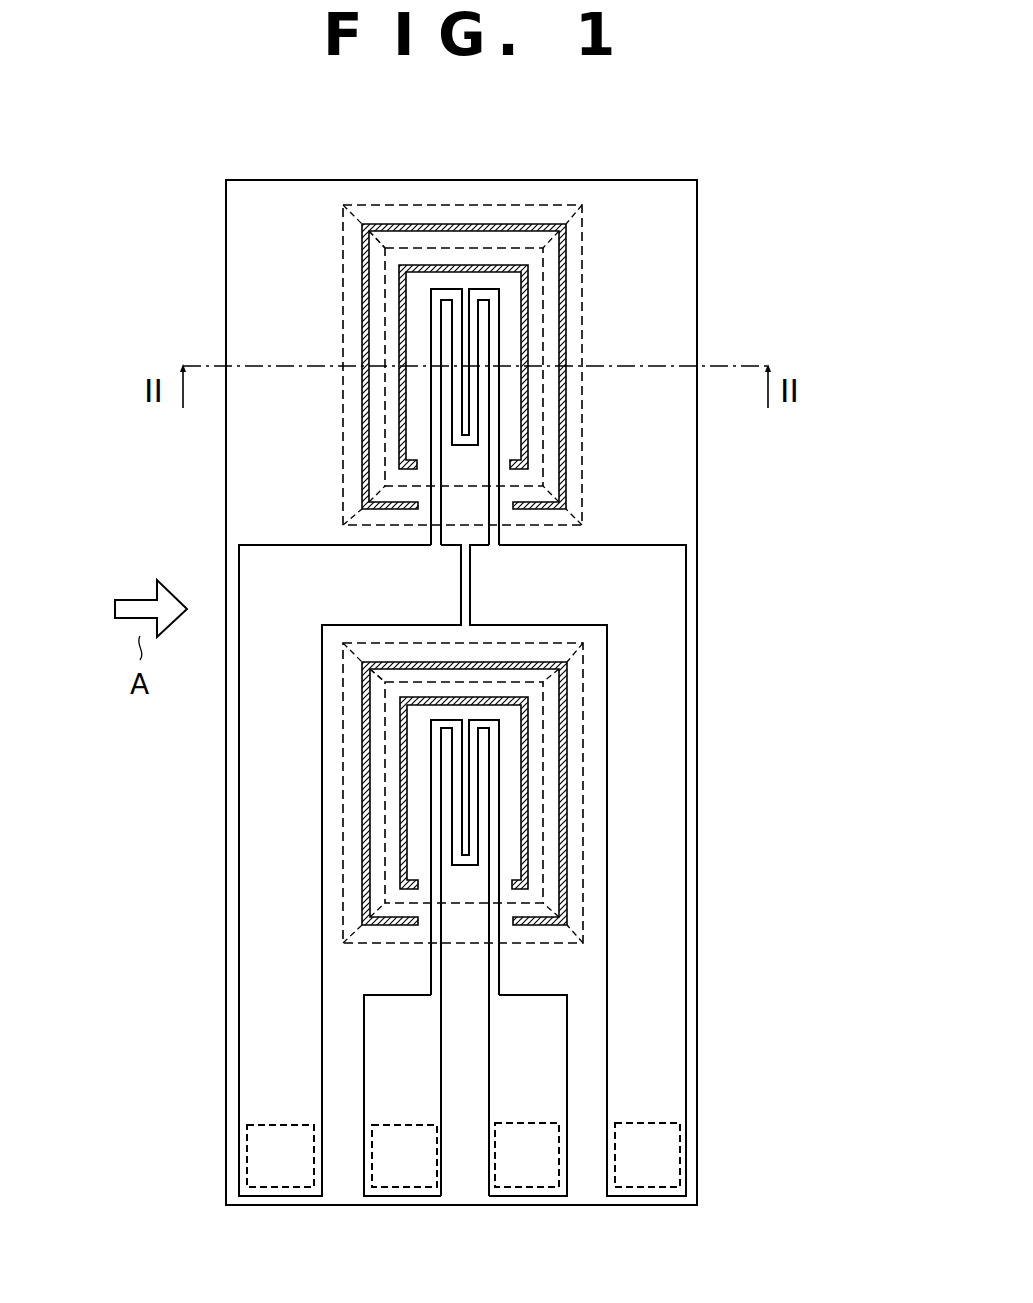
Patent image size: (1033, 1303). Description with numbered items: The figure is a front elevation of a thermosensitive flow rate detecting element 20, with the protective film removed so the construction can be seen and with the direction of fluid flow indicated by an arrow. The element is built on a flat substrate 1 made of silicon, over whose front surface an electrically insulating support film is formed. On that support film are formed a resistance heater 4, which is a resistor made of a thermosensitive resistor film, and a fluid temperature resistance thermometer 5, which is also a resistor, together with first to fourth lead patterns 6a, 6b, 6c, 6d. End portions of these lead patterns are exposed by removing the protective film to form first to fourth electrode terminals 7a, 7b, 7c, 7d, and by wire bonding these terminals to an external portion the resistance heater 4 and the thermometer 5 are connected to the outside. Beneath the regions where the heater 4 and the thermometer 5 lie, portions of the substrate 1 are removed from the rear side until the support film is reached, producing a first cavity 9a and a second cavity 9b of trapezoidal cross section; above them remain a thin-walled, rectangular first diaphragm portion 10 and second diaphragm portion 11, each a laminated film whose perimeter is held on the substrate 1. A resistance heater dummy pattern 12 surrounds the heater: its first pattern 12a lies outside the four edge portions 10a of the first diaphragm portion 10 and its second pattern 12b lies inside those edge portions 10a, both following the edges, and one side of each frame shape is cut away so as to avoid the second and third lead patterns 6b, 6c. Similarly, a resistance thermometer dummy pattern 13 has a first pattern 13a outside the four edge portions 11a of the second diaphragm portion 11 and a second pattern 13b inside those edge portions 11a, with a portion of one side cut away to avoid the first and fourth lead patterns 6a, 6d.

The flat substrate 1 is at (693, 963).
The resistance heater 4 is at (465, 866).
The fluid temperature resistance thermometer 5 is at (465, 448).
The first lead pattern 6a is at (350, 870).
The second lead pattern 6b is at (402, 1095).
The third lead pattern 6c is at (528, 1095).
The fourth lead pattern 6d is at (578, 870).
The first electrode terminal 7a is at (280, 1156).
The second electrode terminal 7b is at (404, 1156).
The third electrode terminal 7c is at (527, 1155).
The fourth electrode terminal 7d is at (647, 1155).
The first cavity 9a is at (436, 682).
The second cavity 9b is at (436, 248).
The first diaphragm portion 10 is at (506, 682).
The edge portions 10a is at (383, 705).
The second diaphragm portion 11 is at (506, 248).
The edge portions 11a is at (378, 268).
The resistance heater dummy pattern 12 is at (357, 904).
The first pattern 12a is at (363, 762).
The second pattern 12b is at (399, 873).
The resistance thermometer dummy pattern 13 is at (357, 454).
The first pattern 13a is at (362, 331).
The second pattern 13b is at (398, 436).
The surface acoustic wave device 20 is at (204, 150).